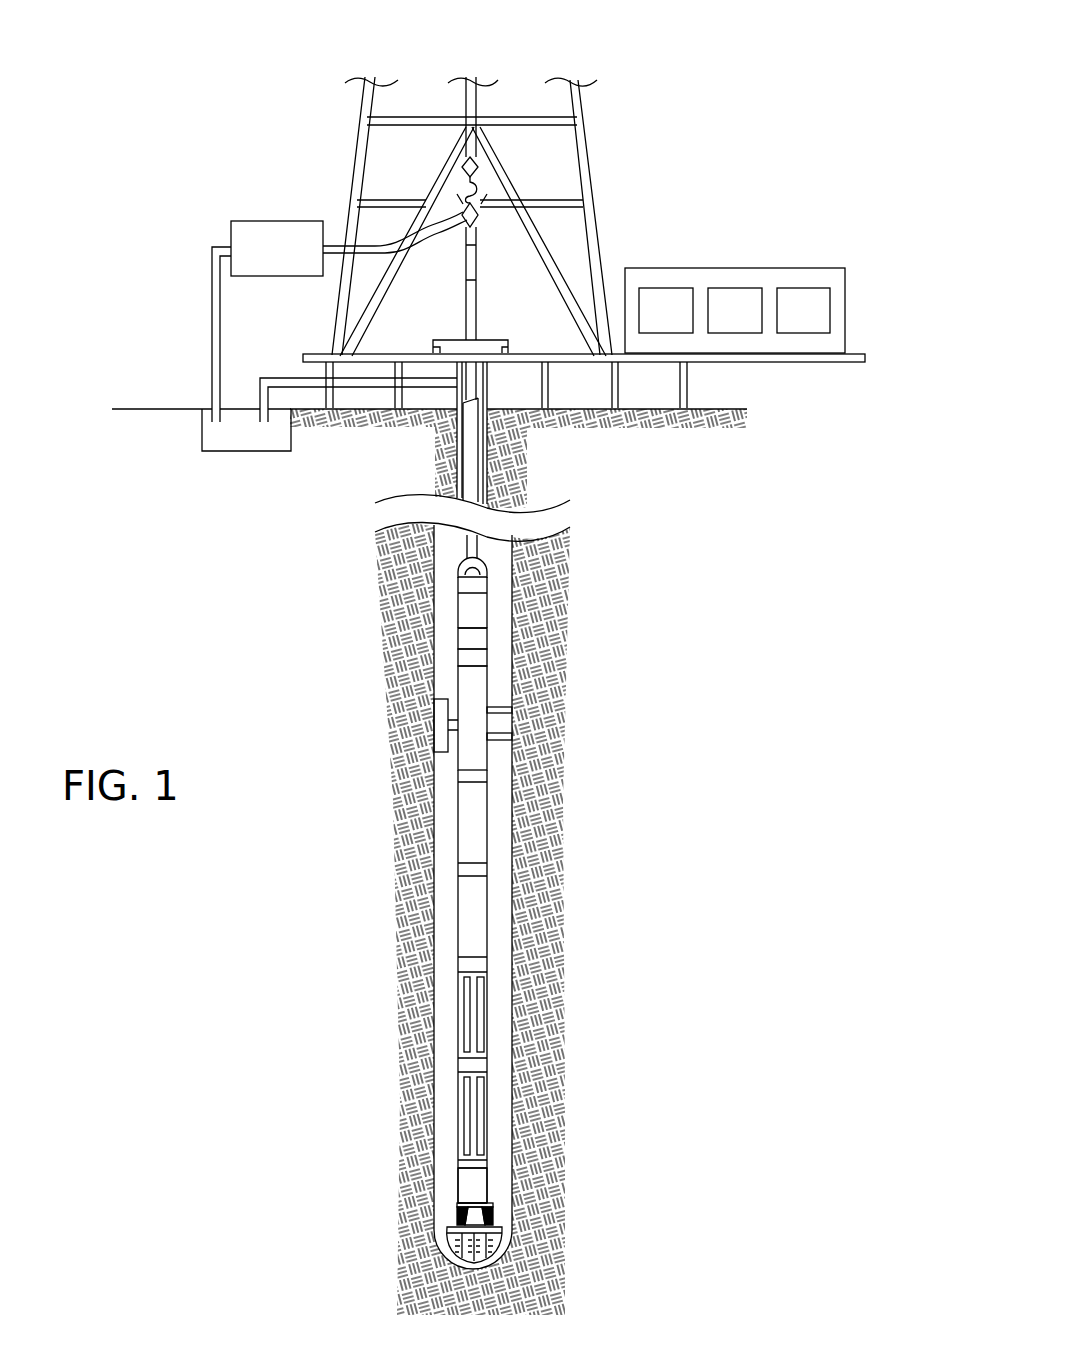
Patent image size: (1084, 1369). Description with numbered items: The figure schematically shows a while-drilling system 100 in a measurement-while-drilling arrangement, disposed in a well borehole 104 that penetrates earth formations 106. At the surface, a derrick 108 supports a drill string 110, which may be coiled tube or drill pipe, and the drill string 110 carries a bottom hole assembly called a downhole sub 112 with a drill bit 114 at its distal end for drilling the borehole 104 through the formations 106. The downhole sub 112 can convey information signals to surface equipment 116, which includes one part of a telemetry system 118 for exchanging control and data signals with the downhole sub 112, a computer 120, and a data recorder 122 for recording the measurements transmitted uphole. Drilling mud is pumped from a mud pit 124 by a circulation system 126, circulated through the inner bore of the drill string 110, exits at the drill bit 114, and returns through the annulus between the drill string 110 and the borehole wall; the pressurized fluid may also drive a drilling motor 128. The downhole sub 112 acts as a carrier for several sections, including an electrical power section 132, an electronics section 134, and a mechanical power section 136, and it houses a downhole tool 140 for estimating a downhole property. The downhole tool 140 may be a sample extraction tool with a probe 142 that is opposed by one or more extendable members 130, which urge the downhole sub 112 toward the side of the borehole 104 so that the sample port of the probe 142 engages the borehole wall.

The while-drilling system 100 is at (772, 60).
The well borehole 104 is at (441, 807).
The earth formations 106 is at (400, 1055).
The derrick 108 is at (583, 147).
The drill string 110 is at (468, 458).
The downhole sub 112 is at (665, 592).
The drill bit 114 is at (498, 1233).
The surface equipment 116 is at (845, 307).
The telemetry system 118 is at (660, 288).
The computer 120 is at (730, 288).
The data recorder 122 is at (800, 288).
The mud pit 124 is at (225, 452).
The circulation system 126 is at (260, 220).
The drilling motor 128 is at (478, 1183).
The extendable members 130 is at (503, 710).
The electrical power section 132 is at (467, 607).
The electronics section 134 is at (475, 640).
The mechanical power section 136 is at (468, 660).
The downhole tool 140 is at (475, 756).
The probe 142 is at (440, 723).